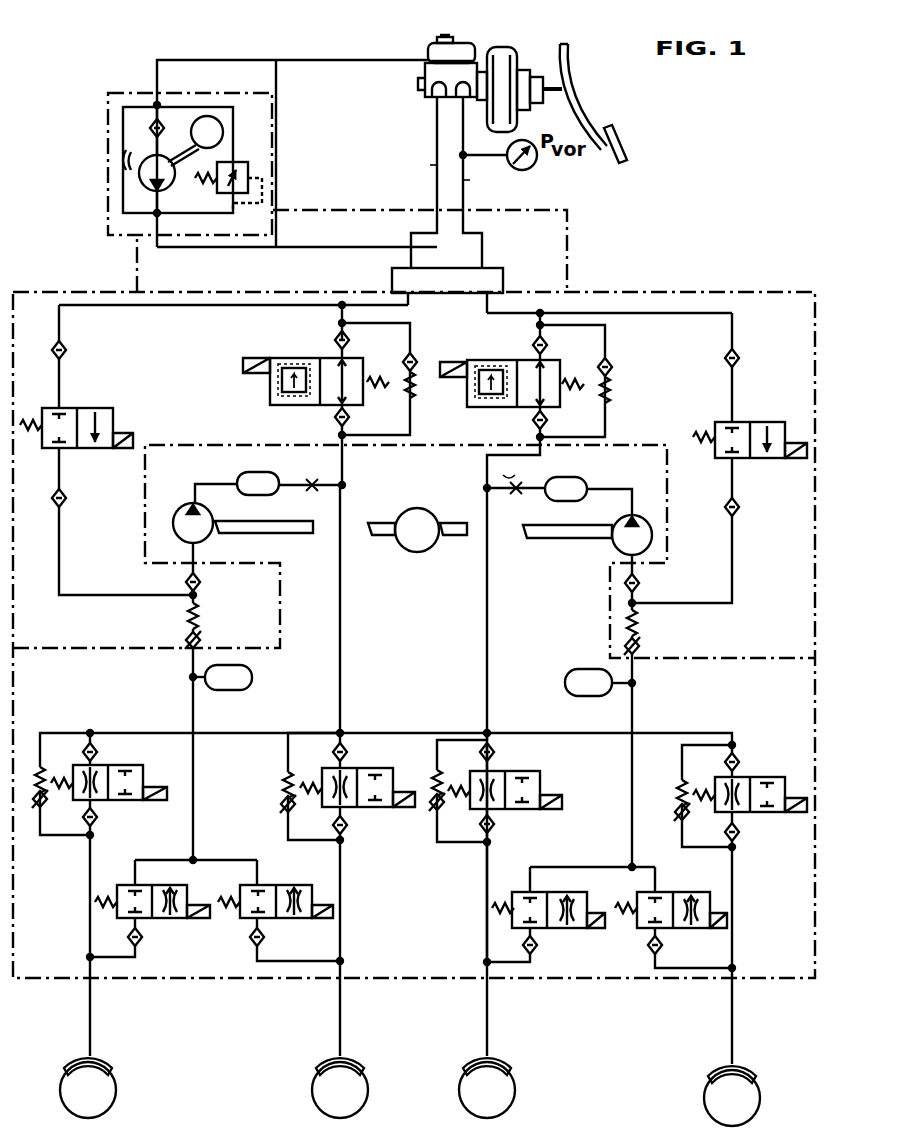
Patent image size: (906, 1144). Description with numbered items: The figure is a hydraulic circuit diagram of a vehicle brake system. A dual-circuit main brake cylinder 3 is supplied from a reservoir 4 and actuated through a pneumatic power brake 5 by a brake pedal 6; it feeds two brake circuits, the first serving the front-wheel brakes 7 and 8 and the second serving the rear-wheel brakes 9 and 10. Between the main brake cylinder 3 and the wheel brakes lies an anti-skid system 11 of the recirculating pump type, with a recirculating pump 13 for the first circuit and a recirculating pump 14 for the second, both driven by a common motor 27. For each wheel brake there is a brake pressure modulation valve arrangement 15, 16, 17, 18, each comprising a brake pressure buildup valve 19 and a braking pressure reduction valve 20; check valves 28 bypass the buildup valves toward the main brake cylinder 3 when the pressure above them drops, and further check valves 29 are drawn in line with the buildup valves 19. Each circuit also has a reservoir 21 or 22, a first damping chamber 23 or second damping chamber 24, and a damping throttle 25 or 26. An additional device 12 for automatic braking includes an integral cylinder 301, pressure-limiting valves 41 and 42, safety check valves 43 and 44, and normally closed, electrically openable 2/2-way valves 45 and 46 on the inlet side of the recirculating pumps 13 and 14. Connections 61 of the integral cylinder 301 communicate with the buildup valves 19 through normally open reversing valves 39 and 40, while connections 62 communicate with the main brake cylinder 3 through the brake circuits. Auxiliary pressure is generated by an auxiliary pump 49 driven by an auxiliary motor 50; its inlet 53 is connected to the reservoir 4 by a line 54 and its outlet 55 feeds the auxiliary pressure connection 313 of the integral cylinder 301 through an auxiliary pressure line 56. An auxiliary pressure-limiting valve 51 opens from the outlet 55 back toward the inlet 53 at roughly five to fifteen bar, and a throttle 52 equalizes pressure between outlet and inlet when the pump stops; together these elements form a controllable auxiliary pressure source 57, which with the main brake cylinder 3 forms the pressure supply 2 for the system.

The pressure supply unit 2 is at (97, 86).
The main brake cylinder 3 is at (420, 86).
The reservoir 4 is at (433, 48).
The pneumatic power brake 5 is at (505, 50).
The brake pedal 6 is at (620, 125).
The front-wheel brake 7 is at (504, 1062).
The front-wheel brake 8 is at (712, 1072).
The rear-wheel brake 9 is at (102, 1060).
The rear-wheel brake 10 is at (326, 1062).
The anti-skid system 11 is at (438, 986).
The device for automatic braking 12 is at (271, 282).
The recirculating pump 13 is at (618, 547).
The recirculating pump 14 is at (211, 537).
The brake pressure modulation valve arrangement 15 is at (547, 789).
The brake pressure modulation valve arrangement 16 is at (704, 780).
The brake pressure modulation valve arrangement 17 is at (104, 812).
The brake pressure modulation valve arrangement 18 is at (362, 820).
The brake pressure buildup valve 19 is at (104, 764).
The braking pressure reduction valve 20 is at (242, 922).
The reservoir 21 is at (578, 675).
The reservoir 22 is at (252, 678).
The first damping chamber 23 is at (578, 486).
The second damping chamber 24 is at (244, 478).
The damping throttle 25 is at (516, 492).
The damping throttle 26 is at (312, 486).
The motor 27 is at (424, 510).
The check valve 28 is at (40, 808).
The check valve 29 is at (748, 730).
The reversing valve 39 is at (547, 364).
The reversing valve 40 is at (336, 360).
The pressure-limiting valve 41 is at (504, 412).
The pressure-limiting valve 42 is at (270, 387).
The check valve 43 is at (613, 386).
The check valve 44 is at (418, 366).
The 2/2-way valve 45 is at (746, 423).
The 2/2-way valve 46 is at (76, 409).
The auxiliary pump 49 is at (156, 174).
The auxiliary motor 50 is at (222, 116).
The auxiliary pressure-limiting valve 51 is at (235, 170).
The throttle 52 is at (118, 160).
The inlet 53 is at (157, 150).
The line 54 is at (193, 59).
The outlet 55 is at (157, 182).
The auxiliary pressure line 56 is at (190, 248).
The controllable auxiliary pressure source 57 is at (104, 172).
The connection 61 is at (412, 297).
The connection 62 is at (410, 266).
The integral cylinder 301 is at (461, 263).
The auxiliary pressure connection 313 is at (443, 263).